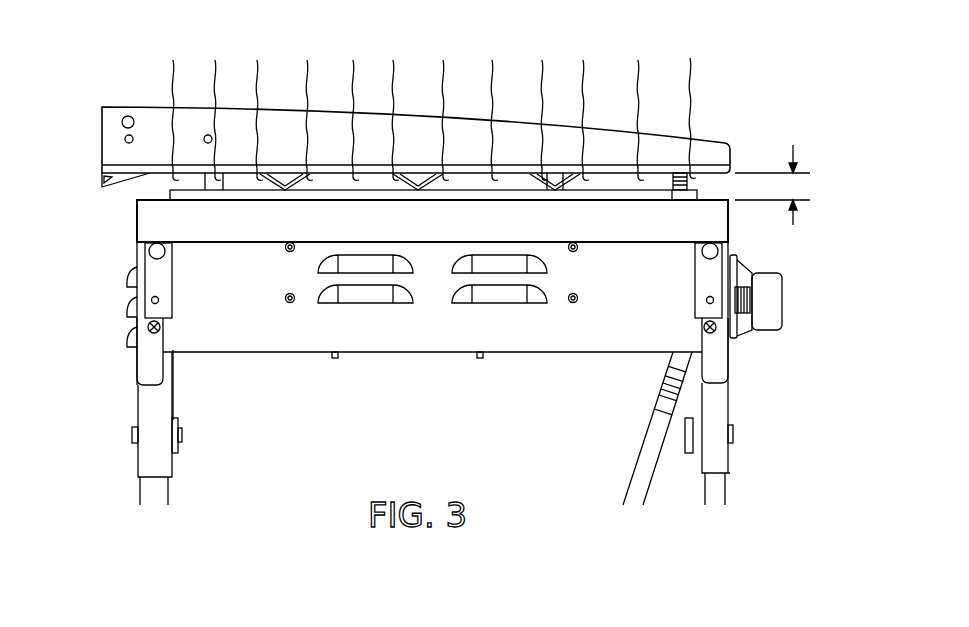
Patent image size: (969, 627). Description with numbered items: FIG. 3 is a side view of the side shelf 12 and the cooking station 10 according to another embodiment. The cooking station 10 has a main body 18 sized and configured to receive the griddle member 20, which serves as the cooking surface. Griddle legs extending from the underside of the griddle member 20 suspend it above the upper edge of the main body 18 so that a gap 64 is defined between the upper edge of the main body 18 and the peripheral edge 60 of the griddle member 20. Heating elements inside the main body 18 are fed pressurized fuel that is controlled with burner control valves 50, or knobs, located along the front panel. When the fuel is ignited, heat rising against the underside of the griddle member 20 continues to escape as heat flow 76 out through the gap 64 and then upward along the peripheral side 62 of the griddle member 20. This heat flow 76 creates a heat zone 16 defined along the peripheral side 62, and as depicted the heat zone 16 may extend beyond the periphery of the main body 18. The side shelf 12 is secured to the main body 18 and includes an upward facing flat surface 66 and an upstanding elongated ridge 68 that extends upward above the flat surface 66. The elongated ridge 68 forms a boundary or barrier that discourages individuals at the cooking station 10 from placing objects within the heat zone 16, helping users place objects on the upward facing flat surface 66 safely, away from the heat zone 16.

The cooking station 10 is at (765, 353).
The side shelf 12 is at (137, 222).
The heat zone 16 is at (695, 52).
The main body 18 is at (620, 352).
The griddle member 20 is at (102, 137).
The burner control valves 50 is at (773, 270).
The peripheral edge 60 is at (672, 173).
The peripheral side 62 is at (148, 117).
The gap 64 is at (795, 155).
The upward facing flat surface 66 is at (606, 197).
The upstanding elongated ridge 68 is at (240, 182).
The heat flow 76 is at (173, 72).